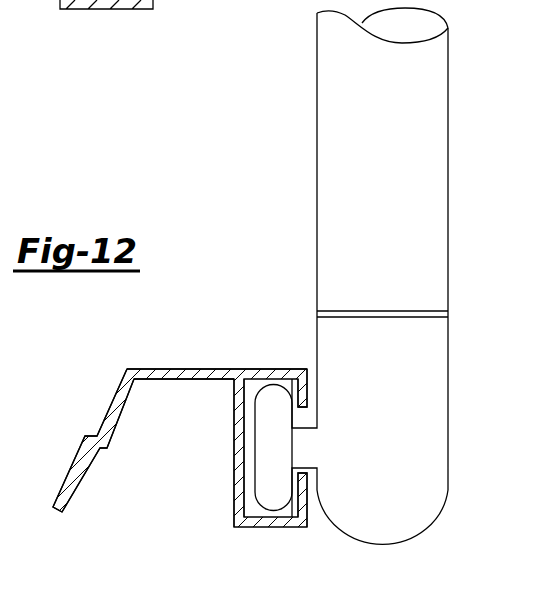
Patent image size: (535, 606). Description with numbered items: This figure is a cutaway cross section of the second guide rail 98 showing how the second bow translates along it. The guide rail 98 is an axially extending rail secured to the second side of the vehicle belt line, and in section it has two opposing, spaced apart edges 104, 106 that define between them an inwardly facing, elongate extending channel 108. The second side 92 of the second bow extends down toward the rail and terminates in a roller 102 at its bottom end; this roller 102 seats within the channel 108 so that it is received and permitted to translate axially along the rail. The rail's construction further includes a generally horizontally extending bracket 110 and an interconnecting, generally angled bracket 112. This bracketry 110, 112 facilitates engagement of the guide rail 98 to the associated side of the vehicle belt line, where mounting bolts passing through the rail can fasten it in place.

The second side 92 is at (438, 178).
The second guide rail 98 is at (184, 357).
The roller 102 is at (288, 451).
The edge 104 is at (306, 504).
The edge 106 is at (303, 382).
The channel 108 is at (247, 452).
The horizontally extending bracket 110 is at (190, 381).
The angled bracket 112 is at (108, 437).